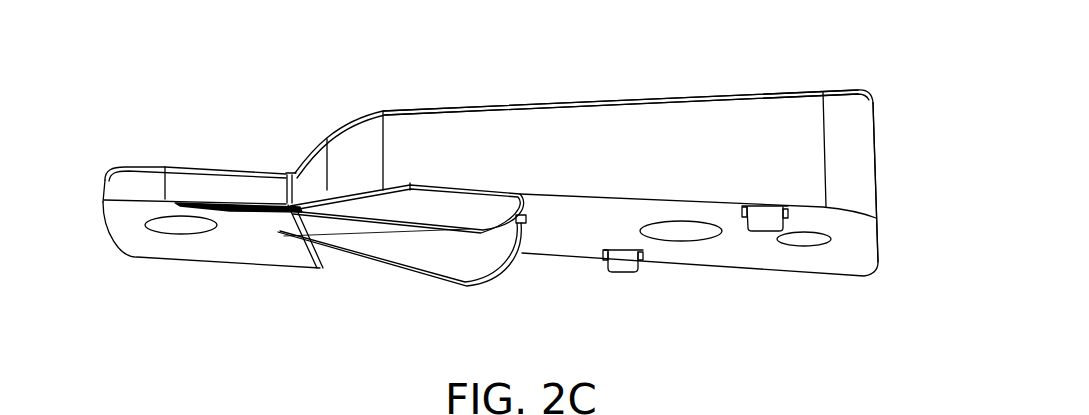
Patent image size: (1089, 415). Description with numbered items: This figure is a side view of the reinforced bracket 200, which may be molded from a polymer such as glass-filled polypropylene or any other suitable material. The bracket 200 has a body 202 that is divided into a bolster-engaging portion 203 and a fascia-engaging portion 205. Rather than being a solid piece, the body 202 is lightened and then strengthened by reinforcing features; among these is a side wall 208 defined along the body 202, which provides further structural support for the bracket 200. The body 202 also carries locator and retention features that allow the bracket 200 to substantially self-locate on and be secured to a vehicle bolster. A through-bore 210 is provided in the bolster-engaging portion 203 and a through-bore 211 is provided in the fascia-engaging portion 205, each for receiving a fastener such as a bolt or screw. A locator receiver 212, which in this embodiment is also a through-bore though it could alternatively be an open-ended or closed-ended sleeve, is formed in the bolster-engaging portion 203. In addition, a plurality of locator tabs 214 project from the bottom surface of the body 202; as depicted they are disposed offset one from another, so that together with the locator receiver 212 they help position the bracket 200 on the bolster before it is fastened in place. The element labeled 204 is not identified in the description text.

The reinforced bracket 200 is at (928, 127).
The body 202 is at (878, 168).
The bolster-engaging portion 203 is at (760, 89).
The chute / tray 204 is at (400, 213).
The fascia-engaging portion 205 is at (179, 164).
The side wall 208 is at (535, 117).
The through-bore 210 is at (679, 234).
The through-bore 211 is at (182, 228).
The locator receiver 212 is at (814, 243).
The locator tabs 214 is at (621, 266).